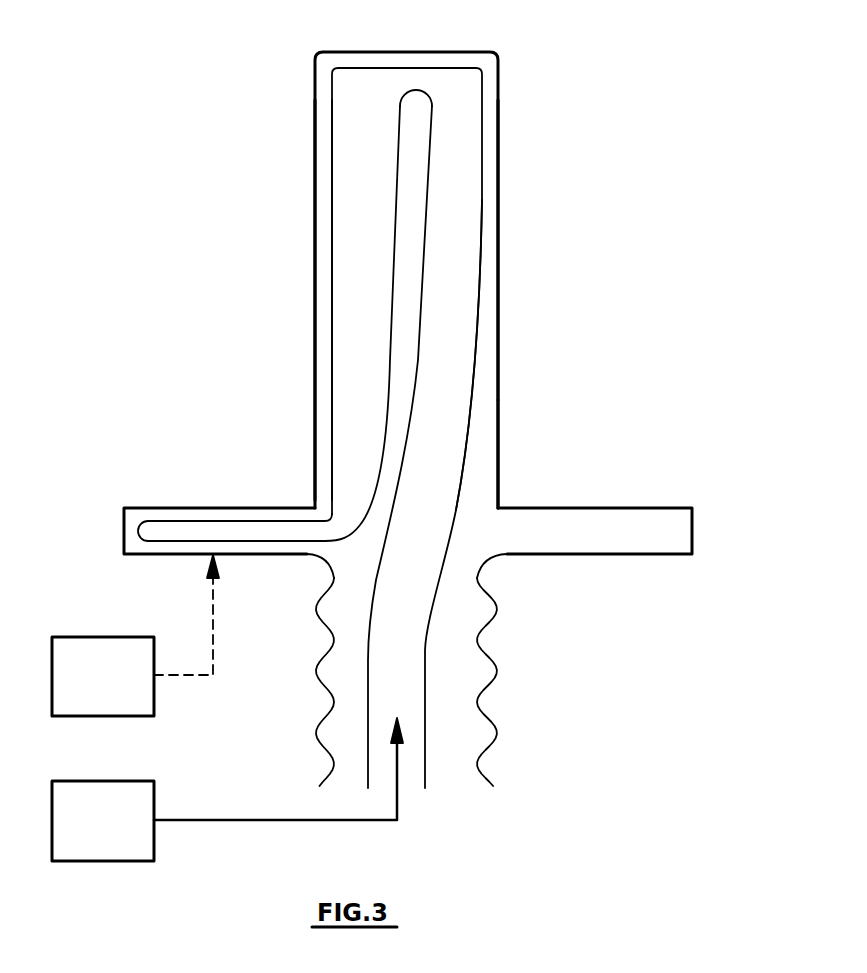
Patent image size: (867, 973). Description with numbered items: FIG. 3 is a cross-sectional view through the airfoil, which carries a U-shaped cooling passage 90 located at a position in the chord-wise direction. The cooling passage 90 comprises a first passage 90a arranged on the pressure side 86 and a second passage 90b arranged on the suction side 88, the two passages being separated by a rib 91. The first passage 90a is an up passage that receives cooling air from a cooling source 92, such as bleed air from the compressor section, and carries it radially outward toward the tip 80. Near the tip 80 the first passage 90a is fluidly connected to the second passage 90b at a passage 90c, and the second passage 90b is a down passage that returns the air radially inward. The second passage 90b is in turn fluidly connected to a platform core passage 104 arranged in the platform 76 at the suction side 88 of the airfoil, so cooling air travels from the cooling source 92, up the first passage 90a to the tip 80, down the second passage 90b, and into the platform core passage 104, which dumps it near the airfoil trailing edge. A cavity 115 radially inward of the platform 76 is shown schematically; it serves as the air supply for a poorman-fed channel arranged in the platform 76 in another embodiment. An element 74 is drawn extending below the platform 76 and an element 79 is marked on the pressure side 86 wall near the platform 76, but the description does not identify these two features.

The inlet conduit 74 is at (340, 723).
The platform 76 is at (591, 508).
The outer wall lower portion 79 is at (498, 449).
The tip 80 is at (450, 52).
The pressure side 86 is at (498, 340).
The suction side 88 is at (315, 330).
The U-shaped cooling passage 90 is at (482, 117).
The first passage 90a is at (463, 247).
The second passage 90b is at (342, 265).
The passage 90c is at (410, 88).
The rib 91 is at (407, 153).
The cooling source 92 is at (85, 833).
The platform core passage 104 is at (217, 528).
The cavity 115 is at (82, 689).